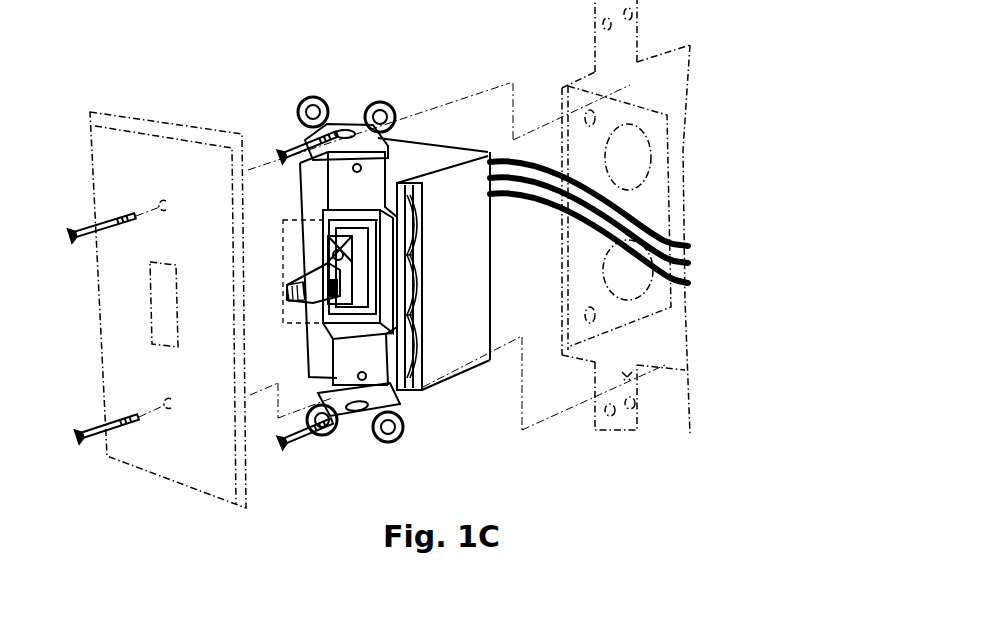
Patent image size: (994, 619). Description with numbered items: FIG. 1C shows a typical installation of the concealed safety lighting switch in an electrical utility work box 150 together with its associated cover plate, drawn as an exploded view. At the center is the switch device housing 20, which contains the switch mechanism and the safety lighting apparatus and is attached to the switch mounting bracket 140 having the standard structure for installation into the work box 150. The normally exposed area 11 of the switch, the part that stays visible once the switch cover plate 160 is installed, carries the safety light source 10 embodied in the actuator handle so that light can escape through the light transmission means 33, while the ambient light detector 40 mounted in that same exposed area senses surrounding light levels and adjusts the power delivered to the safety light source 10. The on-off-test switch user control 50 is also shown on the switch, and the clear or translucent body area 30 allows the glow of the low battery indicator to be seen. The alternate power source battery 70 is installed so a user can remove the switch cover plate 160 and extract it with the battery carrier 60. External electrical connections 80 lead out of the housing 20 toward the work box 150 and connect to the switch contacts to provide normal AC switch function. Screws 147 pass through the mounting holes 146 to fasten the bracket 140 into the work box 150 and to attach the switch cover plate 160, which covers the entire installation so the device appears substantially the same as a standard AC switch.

The safety light source 10 is at (296, 292).
The normally exposed area of a switch 11 is at (291, 330).
The switch device housing 20 is at (447, 350).
The clear or translucent body area 30 is at (393, 198).
The light transmission means 33 is at (306, 284).
The ambient light detector 40 is at (358, 237).
The on-off-test switch user control 50 is at (327, 287).
The battery carrier 60 is at (427, 384).
The alternate power source battery 70 is at (420, 335).
The external electrical connections 80 is at (548, 196).
The switch mounting bracket 140 is at (366, 356).
The mounting holes 146 is at (355, 130).
The screw 147 is at (88, 228).
The electrical utility work box 150 is at (668, 47).
The switch cover plate 160 is at (127, 148).